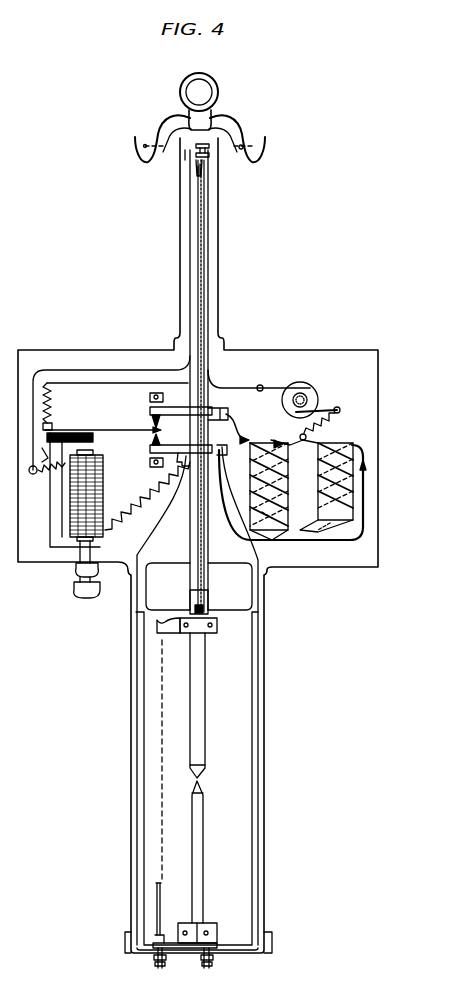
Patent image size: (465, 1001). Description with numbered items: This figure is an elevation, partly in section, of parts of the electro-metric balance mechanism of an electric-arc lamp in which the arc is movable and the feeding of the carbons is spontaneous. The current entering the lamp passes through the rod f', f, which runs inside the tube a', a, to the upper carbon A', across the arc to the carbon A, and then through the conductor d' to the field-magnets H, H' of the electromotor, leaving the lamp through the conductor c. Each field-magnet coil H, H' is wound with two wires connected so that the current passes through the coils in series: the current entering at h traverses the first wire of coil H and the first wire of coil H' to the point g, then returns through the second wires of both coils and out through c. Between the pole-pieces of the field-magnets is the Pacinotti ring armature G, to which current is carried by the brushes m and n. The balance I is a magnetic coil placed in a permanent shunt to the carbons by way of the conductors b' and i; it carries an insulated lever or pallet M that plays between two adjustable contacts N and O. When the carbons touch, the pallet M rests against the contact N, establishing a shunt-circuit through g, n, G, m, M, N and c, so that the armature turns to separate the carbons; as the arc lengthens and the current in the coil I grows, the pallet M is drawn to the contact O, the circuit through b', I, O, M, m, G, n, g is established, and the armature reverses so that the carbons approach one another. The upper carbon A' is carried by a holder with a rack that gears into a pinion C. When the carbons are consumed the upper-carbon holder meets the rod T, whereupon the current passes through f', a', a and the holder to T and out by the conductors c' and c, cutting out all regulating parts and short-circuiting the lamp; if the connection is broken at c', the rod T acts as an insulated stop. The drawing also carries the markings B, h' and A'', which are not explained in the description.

The left hook arm of hanger B is at (162, 147).
The pinion C is at (237, 147).
The rod f' is at (202, 136).
The conductor b' is at (104, 323).
The tube a' is at (182, 178).
The rod f is at (205, 386).
The insulated lever M is at (102, 412).
The adjustable contact N is at (181, 409).
The adjustable contact o is at (181, 447).
The balance I is at (101, 490).
The conductor i is at (147, 505).
The current inlet point h is at (293, 483).
The conductor c is at (228, 424).
The brush m is at (268, 380).
The Pacinotti ring armature G is at (308, 392).
The brush n is at (318, 401).
The connection point g is at (303, 436).
The field-magnet coil H' is at (269, 483).
The left pipe branch h' is at (266, 437).
The field-magnet coil H is at (326, 479).
The tube a is at (199, 588).
The upper rod clamp A'' is at (187, 636).
The upper carbon A' is at (205, 705).
The carbon A is at (197, 862).
The rod T is at (166, 787).
The conductor c' is at (153, 959).
The conductor d' is at (220, 966).